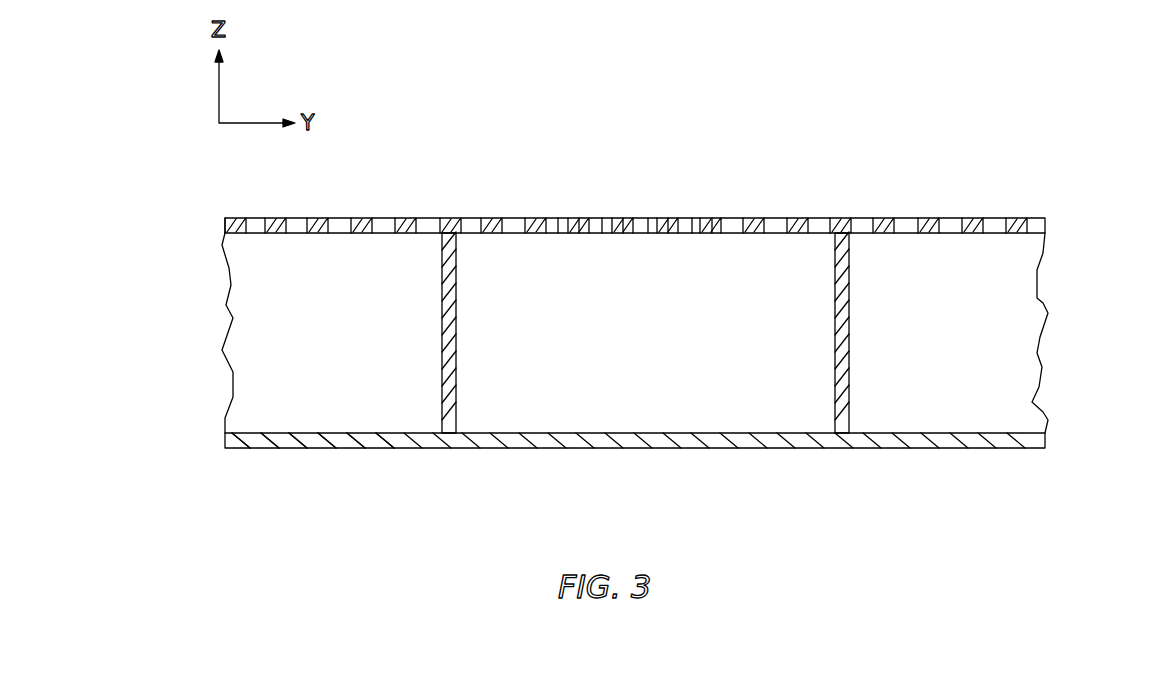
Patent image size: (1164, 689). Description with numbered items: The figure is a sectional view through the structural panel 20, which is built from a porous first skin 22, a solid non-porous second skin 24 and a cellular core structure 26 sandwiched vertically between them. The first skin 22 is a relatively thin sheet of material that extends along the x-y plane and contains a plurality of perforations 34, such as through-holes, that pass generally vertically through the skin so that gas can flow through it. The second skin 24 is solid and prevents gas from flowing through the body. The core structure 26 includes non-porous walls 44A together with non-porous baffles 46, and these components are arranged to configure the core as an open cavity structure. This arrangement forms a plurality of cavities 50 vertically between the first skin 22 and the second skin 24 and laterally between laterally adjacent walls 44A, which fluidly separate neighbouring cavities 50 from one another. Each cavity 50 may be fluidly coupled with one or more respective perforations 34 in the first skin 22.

The structural panel 20 is at (947, 124).
The porous first skin 22 is at (213, 228).
The solid non-porous second skin 24 is at (220, 446).
The cellular core structure 26 is at (170, 232).
The perforations 34 is at (692, 218).
The non-porous walls 44A is at (457, 397).
The non-porous baffles 46 is at (335, 402).
The cavities 50 is at (368, 412).